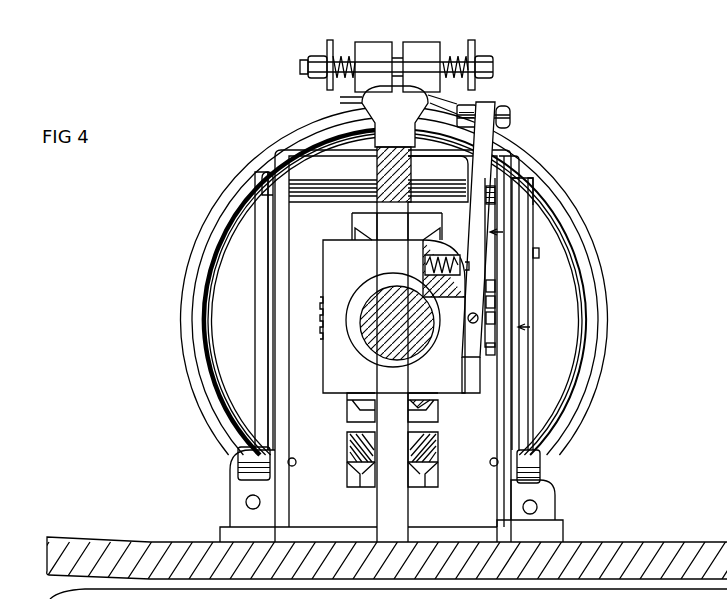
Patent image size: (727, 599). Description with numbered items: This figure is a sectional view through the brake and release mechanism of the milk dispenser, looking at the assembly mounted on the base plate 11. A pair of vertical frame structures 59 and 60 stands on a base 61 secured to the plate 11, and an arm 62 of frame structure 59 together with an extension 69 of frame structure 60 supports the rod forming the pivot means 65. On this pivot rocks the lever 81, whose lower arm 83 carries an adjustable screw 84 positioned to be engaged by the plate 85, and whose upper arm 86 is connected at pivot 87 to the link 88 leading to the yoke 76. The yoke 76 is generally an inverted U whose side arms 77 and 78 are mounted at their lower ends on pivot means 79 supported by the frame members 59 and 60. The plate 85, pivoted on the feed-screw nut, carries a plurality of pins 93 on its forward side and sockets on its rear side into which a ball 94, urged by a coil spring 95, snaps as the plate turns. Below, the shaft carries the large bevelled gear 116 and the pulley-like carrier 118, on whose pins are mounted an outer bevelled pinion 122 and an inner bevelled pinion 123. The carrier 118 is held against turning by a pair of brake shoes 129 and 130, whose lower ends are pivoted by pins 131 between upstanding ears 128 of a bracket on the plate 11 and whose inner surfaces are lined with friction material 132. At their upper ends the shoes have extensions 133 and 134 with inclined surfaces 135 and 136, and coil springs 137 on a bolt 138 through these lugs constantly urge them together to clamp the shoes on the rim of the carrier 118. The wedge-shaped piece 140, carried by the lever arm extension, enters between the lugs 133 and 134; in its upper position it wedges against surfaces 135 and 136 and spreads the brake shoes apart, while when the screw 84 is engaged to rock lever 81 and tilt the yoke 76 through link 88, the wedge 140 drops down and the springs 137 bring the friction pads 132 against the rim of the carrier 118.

The base plate 11 is at (52, 537).
The vertical frame structure 59 is at (530, 327).
The vertical frame structure 60 is at (270, 295).
The base 61 is at (553, 532).
The arm 62 is at (508, 210).
The pivot means 65 is at (520, 176).
The extension 69 is at (275, 213).
The yoke 76 is at (535, 277).
The side arm 77 is at (530, 383).
The side arm 78 is at (262, 368).
The pivot means 79 is at (240, 458).
The lever 81 is at (503, 232).
The lower arm 83 is at (477, 220).
The adjustable screw 84 is at (469, 322).
The plate 85 is at (474, 385).
The upper arm 86 is at (490, 139).
The pivot 87 is at (510, 122).
The link 88 is at (505, 106).
The pins 93 is at (495, 315).
The ball 94 is at (548, 246).
The coil spring 95 is at (430, 263).
The bevelled gear 116 is at (350, 436).
The carrier 118 is at (552, 385).
The outer bevelled pinion 122 is at (365, 456).
The inner bevelled pinion 123 is at (350, 402).
The upstanding ears 128 is at (245, 490).
The brake shoe 129 is at (190, 257).
The brake shoe 130 is at (600, 325).
The pins 131 is at (246, 503).
The friction material 132 is at (200, 293).
The extension 133 is at (382, 55).
The extension 134 is at (428, 55).
The inclined surface 135 is at (388, 92).
The inclined surface 136 is at (474, 110).
The coil springs 137 is at (338, 50).
The bolt 138 is at (493, 65).
The wedge-shaped piece 140 is at (384, 314).